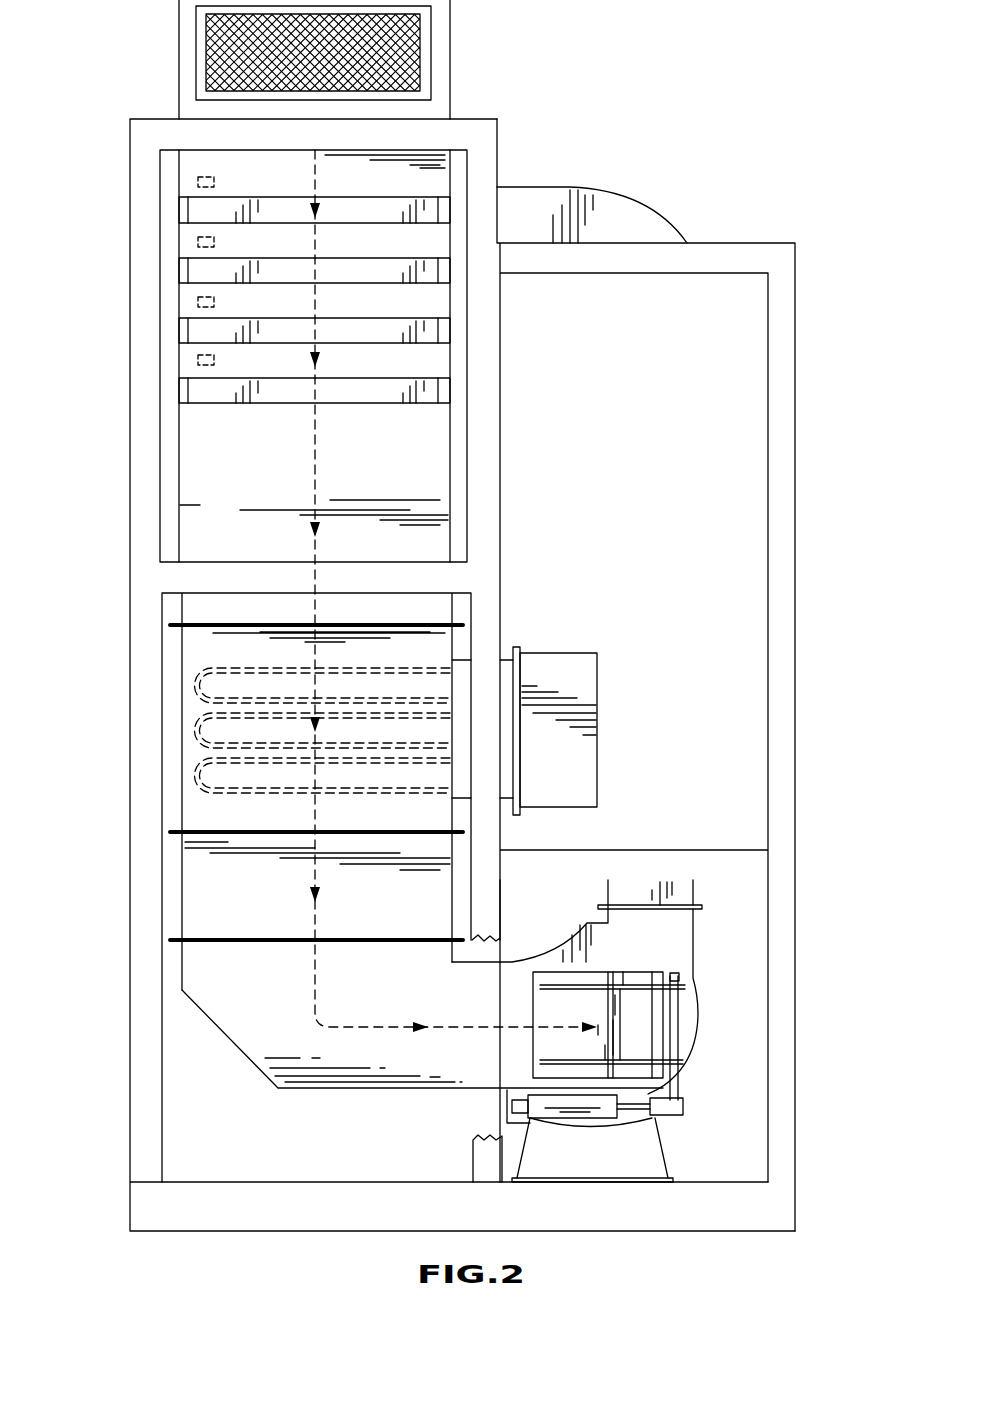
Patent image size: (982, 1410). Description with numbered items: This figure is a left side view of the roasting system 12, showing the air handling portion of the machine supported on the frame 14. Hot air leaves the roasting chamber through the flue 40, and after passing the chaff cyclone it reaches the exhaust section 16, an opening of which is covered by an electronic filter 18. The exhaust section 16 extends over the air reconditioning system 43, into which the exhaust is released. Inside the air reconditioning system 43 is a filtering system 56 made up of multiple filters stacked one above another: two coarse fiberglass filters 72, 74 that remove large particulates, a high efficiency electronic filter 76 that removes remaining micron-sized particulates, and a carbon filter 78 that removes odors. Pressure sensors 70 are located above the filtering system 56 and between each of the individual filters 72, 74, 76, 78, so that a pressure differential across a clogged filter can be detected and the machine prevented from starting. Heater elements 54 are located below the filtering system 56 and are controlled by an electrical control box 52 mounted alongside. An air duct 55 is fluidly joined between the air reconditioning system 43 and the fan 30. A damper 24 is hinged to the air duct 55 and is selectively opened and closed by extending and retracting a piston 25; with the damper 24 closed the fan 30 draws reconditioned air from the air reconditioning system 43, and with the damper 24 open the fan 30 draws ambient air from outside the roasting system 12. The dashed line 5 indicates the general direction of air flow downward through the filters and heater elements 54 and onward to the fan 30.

The roasting system 12 is at (765, 84).
The frame 14 is at (796, 278).
The exhaust section 16 is at (450, 62).
The electronic filter 18 is at (432, 21).
The flue 40 is at (613, 187).
The air reconditioning system 43 is at (110, 482).
The coarse fiberglass filter 72 is at (185, 213).
The coarse fiberglass filter 74 is at (185, 273).
The high efficiency electronic filter 76 is at (185, 334).
The carbon filter 78 is at (185, 393).
The pressure sensors 70 is at (215, 182).
The filtering system 56 is at (236, 420).
The electrical control box 52 is at (556, 652).
The heater elements 54 is at (182, 724).
The dashed line 5 is at (316, 981).
The air duct 55 is at (335, 1090).
The fan 30 is at (697, 980).
The damper 24 is at (533, 1048).
The piston 25 is at (572, 1118).